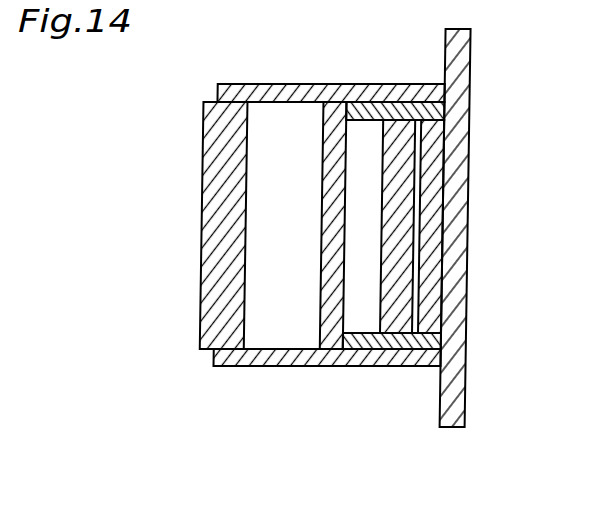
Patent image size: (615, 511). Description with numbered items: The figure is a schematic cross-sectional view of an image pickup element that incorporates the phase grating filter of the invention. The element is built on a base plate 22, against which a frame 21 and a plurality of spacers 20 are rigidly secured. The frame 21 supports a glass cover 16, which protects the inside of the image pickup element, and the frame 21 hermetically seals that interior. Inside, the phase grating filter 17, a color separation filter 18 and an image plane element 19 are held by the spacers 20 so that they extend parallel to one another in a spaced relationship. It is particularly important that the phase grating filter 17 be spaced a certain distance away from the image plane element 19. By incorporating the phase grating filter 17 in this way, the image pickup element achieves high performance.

The glass cover 16 is at (206, 328).
The phase grating filter 17 is at (326, 341).
The color separation filter 18 is at (397, 351).
The image plane element 19 is at (441, 342).
The spacers 20 is at (438, 337).
The frame 21 is at (290, 84).
The base plate 22 is at (466, 69).